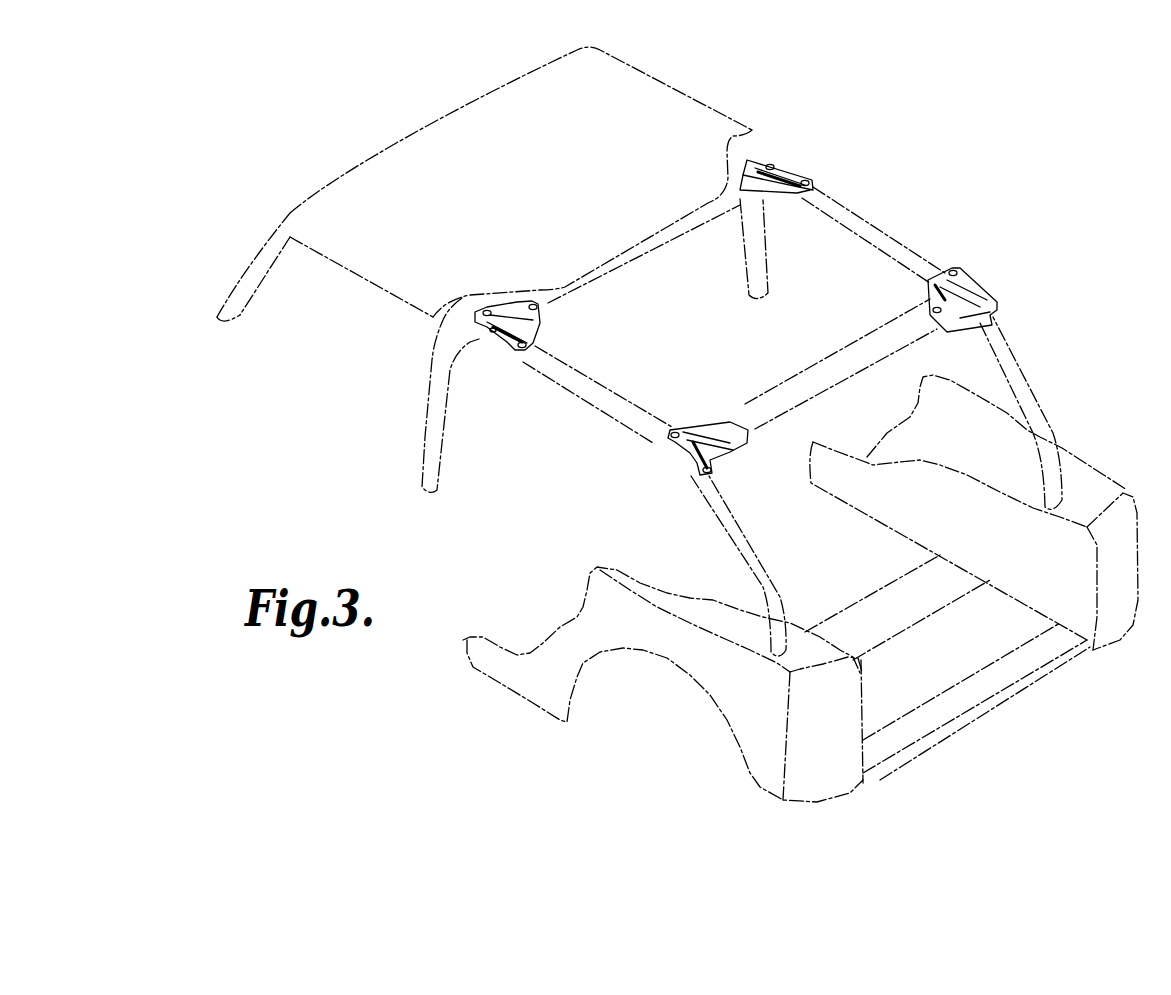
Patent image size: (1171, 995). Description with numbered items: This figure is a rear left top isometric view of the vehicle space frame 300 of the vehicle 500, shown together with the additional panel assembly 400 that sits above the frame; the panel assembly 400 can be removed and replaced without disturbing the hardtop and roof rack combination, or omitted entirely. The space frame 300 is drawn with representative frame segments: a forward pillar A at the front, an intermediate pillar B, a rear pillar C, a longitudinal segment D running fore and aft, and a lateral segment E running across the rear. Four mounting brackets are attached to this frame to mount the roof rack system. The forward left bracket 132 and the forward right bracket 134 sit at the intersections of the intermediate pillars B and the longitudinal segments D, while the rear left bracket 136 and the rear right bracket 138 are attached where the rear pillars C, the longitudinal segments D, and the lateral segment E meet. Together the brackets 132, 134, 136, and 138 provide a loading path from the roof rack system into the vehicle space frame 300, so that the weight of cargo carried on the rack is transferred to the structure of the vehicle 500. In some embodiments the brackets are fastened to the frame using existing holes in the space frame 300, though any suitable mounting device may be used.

The additional panel assembly 400 is at (656, 79).
The forward pillar A is at (250, 262).
The vehicle space frame 300 is at (721, 406).
The longitudinal segment D is at (826, 193).
The lateral segment E is at (824, 358).
The intermediate pillar B is at (422, 447).
The rear pillar C is at (1023, 380).
The forward left bracket 132 is at (503, 350).
The forward right bracket 134 is at (777, 170).
The rear left bracket 136 is at (692, 448).
The rear right bracket 138 is at (955, 283).
The vehicle 500 is at (1090, 463).